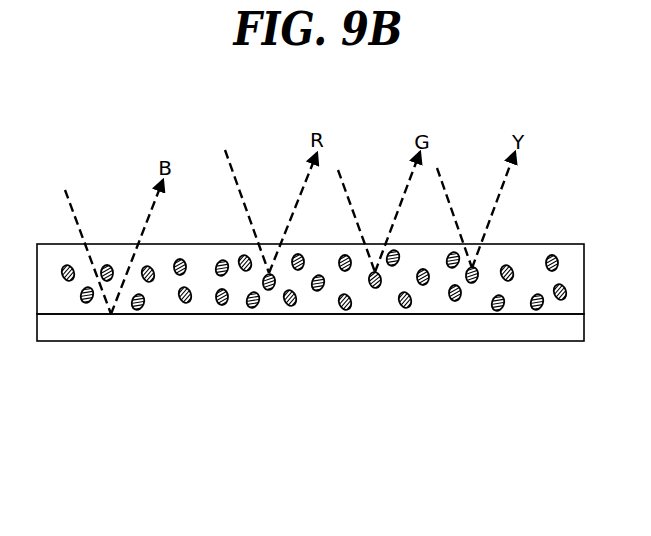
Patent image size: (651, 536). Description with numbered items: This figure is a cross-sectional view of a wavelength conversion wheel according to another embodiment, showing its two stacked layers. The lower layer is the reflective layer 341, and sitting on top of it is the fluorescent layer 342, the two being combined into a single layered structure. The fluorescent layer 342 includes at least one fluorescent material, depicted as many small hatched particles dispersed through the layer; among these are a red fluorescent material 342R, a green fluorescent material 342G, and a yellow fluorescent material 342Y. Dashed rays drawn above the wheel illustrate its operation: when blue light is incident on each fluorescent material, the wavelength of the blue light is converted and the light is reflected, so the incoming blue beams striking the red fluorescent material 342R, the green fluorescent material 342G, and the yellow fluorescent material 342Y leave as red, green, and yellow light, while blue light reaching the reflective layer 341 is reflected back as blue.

The reflective layer 341 is at (152, 330).
The fluorescent layer 342 is at (318, 302).
The red fluorescent material 342R is at (269, 290).
The green fluorescent material 342G is at (375, 288).
The yellow fluorescent material 342Y is at (472, 283).